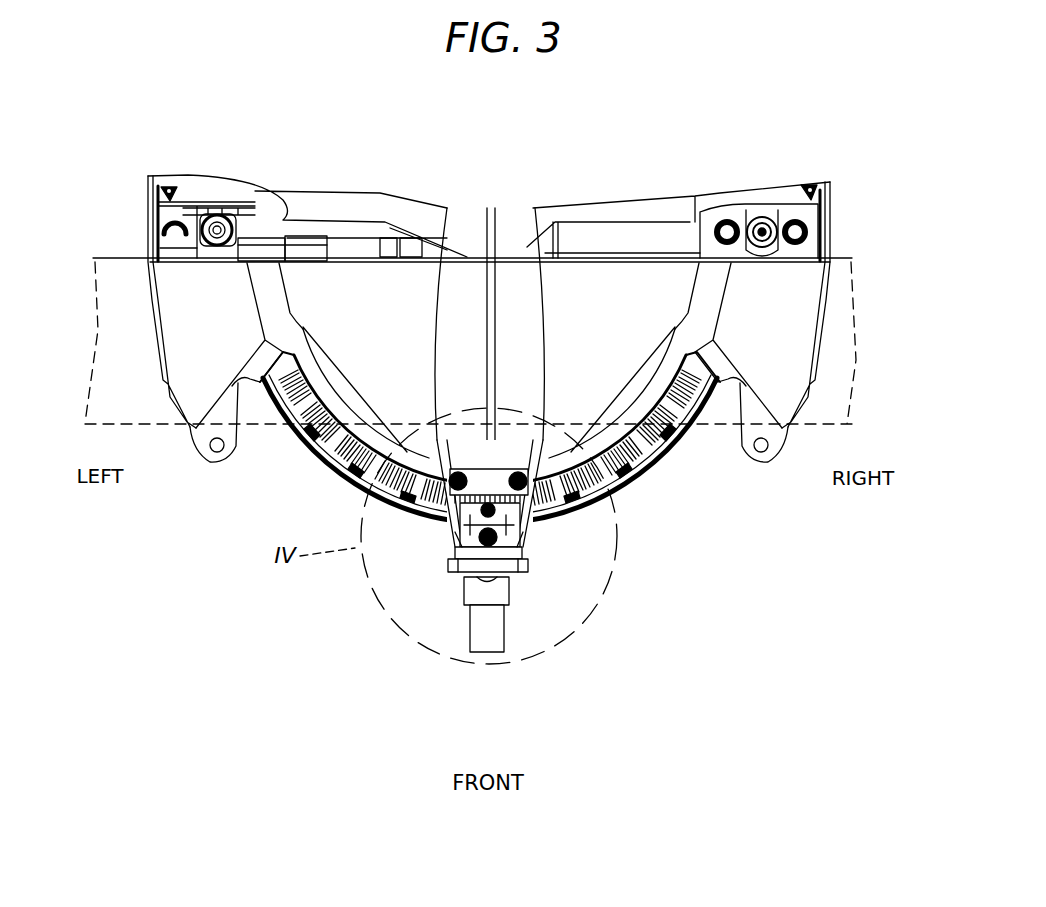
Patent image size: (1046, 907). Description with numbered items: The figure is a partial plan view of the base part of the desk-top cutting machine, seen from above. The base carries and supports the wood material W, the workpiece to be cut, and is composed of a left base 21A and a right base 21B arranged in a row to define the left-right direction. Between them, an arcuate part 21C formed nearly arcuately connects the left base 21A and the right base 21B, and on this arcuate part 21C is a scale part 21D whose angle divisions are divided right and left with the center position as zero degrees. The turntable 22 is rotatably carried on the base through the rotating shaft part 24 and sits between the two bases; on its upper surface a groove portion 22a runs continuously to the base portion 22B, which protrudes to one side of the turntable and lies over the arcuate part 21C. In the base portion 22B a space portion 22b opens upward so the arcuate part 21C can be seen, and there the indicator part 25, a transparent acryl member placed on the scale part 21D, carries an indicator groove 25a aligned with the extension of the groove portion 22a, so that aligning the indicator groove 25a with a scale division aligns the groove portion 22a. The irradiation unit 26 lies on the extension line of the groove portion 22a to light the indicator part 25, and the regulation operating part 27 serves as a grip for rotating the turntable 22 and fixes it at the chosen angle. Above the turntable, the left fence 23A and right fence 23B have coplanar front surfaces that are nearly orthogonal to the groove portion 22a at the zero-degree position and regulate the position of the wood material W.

The left base 21A is at (217, 464).
The right base 21B is at (760, 464).
The arcuate part 21C is at (633, 462).
The scale part 21D is at (458, 482).
The turntable 22 is at (315, 455).
The groove portion 22a is at (490, 317).
The base portion 22B is at (470, 525).
The space portion 22b is at (512, 563).
The left fence 23A is at (158, 233).
The right fence 23B is at (825, 238).
The rotating shaft part 24 is at (480, 262).
The indicator part 25 is at (523, 504).
The indicator groove 25a is at (520, 530).
The irradiation unit 26 is at (518, 548).
The regulation operating part 27 is at (490, 645).
The wood material W is at (858, 350).